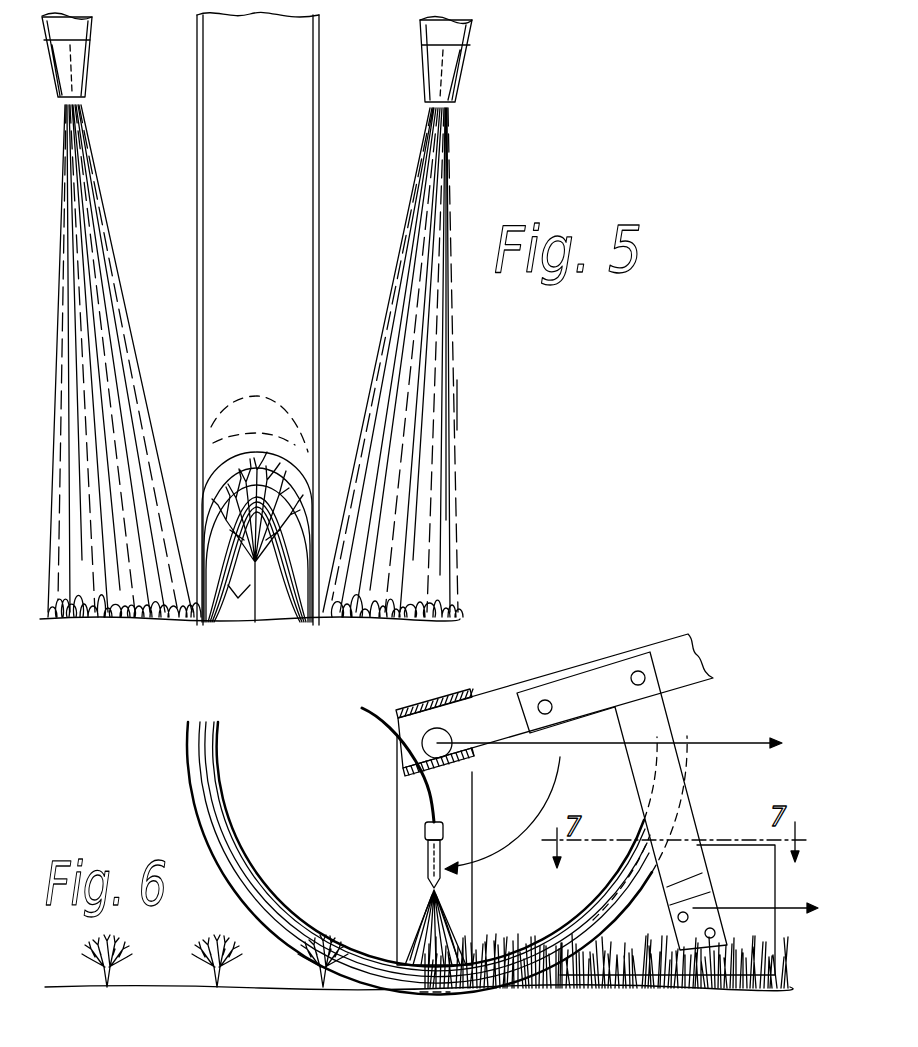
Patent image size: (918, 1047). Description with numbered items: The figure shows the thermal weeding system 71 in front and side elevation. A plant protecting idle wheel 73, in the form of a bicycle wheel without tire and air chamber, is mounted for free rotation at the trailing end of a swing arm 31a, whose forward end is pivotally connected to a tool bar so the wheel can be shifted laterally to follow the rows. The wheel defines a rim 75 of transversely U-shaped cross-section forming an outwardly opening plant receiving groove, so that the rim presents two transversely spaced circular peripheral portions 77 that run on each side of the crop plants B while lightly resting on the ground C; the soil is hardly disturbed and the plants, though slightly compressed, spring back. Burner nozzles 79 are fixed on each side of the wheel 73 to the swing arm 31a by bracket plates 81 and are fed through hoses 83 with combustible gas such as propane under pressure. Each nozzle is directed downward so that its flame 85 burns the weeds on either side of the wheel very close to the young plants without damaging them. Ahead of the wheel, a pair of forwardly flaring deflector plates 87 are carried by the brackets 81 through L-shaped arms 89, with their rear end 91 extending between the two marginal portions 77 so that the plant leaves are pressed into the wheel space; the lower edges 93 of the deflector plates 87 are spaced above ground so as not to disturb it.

In FIG. 5, the thermal weeding system 71 is at (465, 386).
In FIG. 6, the thermal weeding system 71 is at (568, 648).
In FIG. 5, the plant protecting idle wheel 73 is at (326, 247).
In FIG. 6, the plant protecting idle wheel 73 is at (360, 866).
In FIG. 5, the rim 75 is at (300, 600).
In FIG. 6, the rim 75 is at (240, 836).
In FIG. 5, the circular peripheral portions 77 is at (193, 597).
In FIG. 6, the circular peripheral portions 77 is at (190, 788).
In FIG. 5, the burner nozzle 79 is at (72, 73).
In FIG. 6, the burner nozzle 79 is at (425, 876).
In FIG. 5, the flame 85 is at (405, 490).
In FIG. 6, the swing arm 31a is at (672, 652).
In FIG. 6, the bracket plate 81 is at (397, 813).
In FIG. 6, the hose 83 is at (440, 797).
In FIG. 6, the deflector plate 87 is at (730, 858).
In FIG. 6, the L-shaped arm 89 is at (655, 727).
In FIG. 6, the rear end 91 is at (593, 920).
In FIG. 6, the lower edge 93 is at (672, 976).
In FIG. 5, the crop plants B is at (236, 598).
In FIG. 6, the crop plants B is at (207, 936).
In FIG. 6, the ground surface C is at (262, 990).